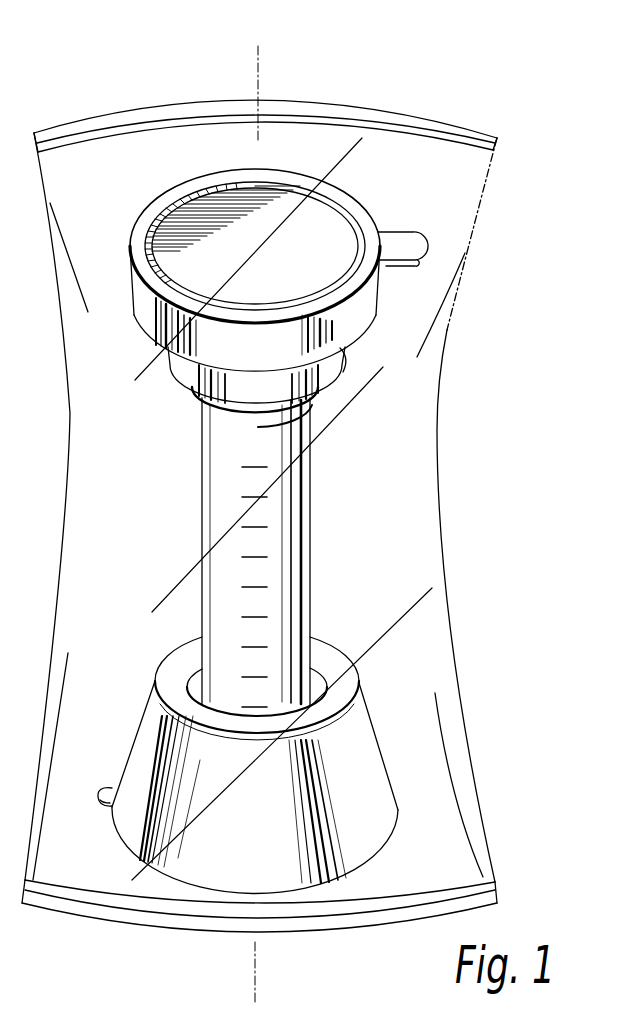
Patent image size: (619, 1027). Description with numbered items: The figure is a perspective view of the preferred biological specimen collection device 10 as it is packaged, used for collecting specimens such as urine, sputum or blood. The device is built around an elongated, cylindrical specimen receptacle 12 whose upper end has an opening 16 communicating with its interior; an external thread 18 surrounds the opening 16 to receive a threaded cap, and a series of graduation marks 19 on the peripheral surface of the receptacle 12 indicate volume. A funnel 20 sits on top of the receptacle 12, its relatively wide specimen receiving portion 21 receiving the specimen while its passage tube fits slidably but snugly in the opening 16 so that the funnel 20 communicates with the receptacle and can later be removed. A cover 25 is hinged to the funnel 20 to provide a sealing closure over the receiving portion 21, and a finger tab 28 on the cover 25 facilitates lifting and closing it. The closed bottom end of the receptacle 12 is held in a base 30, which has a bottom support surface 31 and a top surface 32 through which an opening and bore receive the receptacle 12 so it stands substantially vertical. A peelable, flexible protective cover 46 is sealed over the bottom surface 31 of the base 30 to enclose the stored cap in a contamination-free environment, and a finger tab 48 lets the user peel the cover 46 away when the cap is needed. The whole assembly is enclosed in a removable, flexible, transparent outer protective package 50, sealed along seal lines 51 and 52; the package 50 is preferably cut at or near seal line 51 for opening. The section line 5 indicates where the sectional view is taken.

The section line 5- 5 is at (258, 46).
The biological specimen collection device 10 is at (398, 488).
The specimen receptacle 12 is at (312, 588).
The opening 16 is at (347, 362).
The external thread 18 is at (308, 405).
The graduation marks 19 is at (253, 525).
The funnel 20 is at (187, 363).
The specimen receiving portion 21 is at (132, 280).
The cover 25 is at (217, 205).
The finger tab 28 is at (425, 247).
The base 30 is at (375, 753).
The bottom support surface 31 is at (392, 813).
The top surface 32 is at (332, 642).
The protective cover 46 is at (165, 850).
The finger tab 48 is at (100, 790).
The outer protective package 50 is at (443, 652).
The seal line 51 is at (410, 902).
The seal line 52 is at (448, 135).